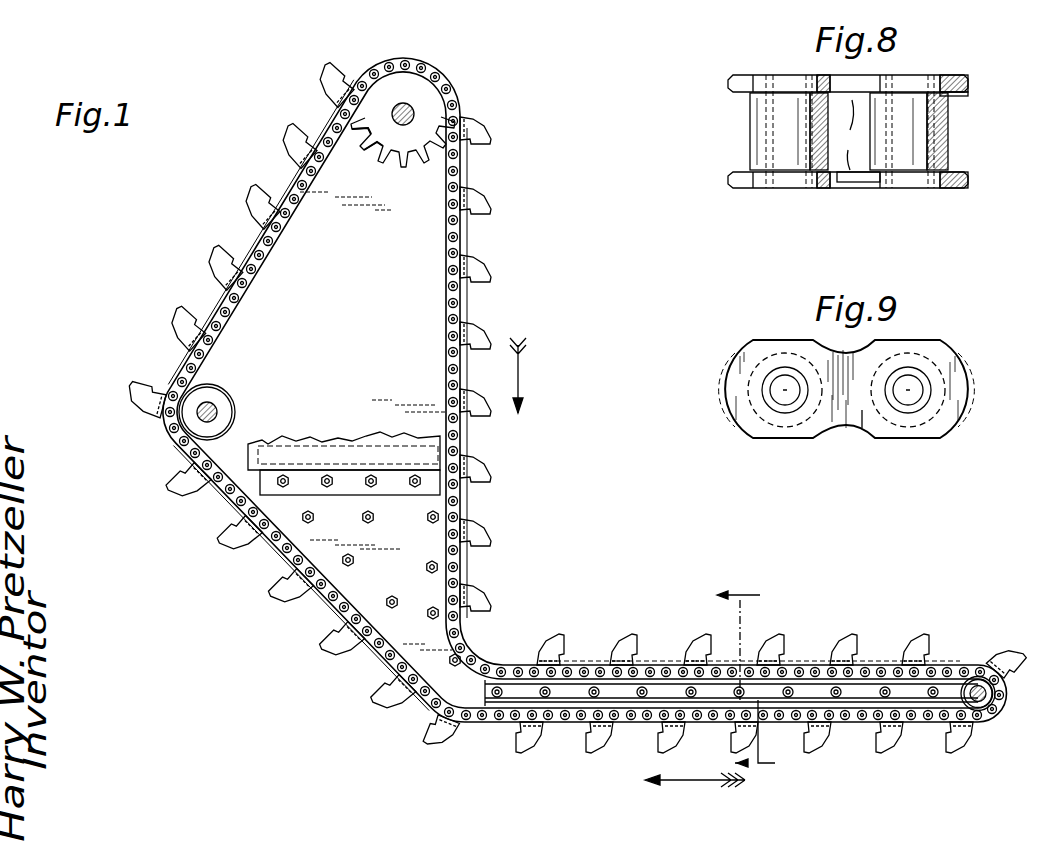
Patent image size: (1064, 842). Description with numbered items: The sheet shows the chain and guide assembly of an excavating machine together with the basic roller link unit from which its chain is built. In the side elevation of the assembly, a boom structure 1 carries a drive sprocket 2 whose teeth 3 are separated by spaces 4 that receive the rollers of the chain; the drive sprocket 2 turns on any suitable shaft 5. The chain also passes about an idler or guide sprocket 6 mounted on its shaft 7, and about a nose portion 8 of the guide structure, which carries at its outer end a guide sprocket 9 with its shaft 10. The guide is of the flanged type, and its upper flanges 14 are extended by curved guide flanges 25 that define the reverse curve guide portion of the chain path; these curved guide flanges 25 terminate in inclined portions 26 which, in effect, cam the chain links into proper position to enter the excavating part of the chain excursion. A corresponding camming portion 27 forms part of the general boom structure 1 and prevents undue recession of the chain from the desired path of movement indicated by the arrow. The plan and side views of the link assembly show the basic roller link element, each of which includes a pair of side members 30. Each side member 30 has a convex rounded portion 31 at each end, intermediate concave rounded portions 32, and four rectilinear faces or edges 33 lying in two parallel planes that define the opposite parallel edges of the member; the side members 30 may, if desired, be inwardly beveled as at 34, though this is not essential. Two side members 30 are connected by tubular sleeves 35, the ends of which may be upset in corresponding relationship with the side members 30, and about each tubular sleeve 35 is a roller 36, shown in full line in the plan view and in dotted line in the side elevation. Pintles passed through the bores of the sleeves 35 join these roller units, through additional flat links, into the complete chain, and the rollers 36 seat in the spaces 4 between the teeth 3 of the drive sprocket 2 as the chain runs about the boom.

In FIG. 1, the boom structure 1 is at (462, 514).
In FIG. 1, the drive sprocket 2 is at (410, 148).
In FIG. 1, the teeth 3 is at (367, 142).
In FIG. 1, the spaces 4 is at (382, 162).
In FIG. 1, the shaft 5 is at (409, 106).
In FIG. 1, the idler or guide sprocket 6 is at (222, 403).
In FIG. 1, the shaft 7 is at (217, 412).
In FIG. 1, the nose portion 8 is at (655, 686).
In FIG. 1, the guide sprocket 9 is at (976, 676).
In FIG. 1, the shaft 10 is at (988, 688).
In FIG. 1, the upper flanges 14 is at (604, 667).
In FIG. 1, the curved guide flanges 25 is at (480, 628).
In FIG. 1, the inclined portions 26 is at (464, 566).
In FIG. 1, the camming portion 27 is at (408, 528).
In FIG. 1, the side members 30 is at (460, 432).
In FIG. 8, the side members 30 is at (847, 135).
In FIG. 9, the side members 30 is at (860, 430).
In FIG. 8, the convex rounded portion 31 is at (728, 82).
In FIG. 9, the convex rounded portion 31 is at (728, 402).
In FIG. 8, the concave rounded portions 32 is at (858, 83).
In FIG. 9, the concave rounded portions 32 is at (862, 346).
In FIG. 8, the rectilinear faces or edges 33 is at (786, 88).
In FIG. 9, the rectilinear faces or edges 33 is at (776, 342).
In FIG. 8, the inward bevel 34 is at (950, 95).
In FIG. 8, the tubular sleeves 35 is at (768, 190).
In FIG. 9, the tubular sleeves 35 is at (780, 408).
In FIG. 8, the roller 36 is at (750, 138).
In FIG. 9, the roller 36 is at (750, 370).